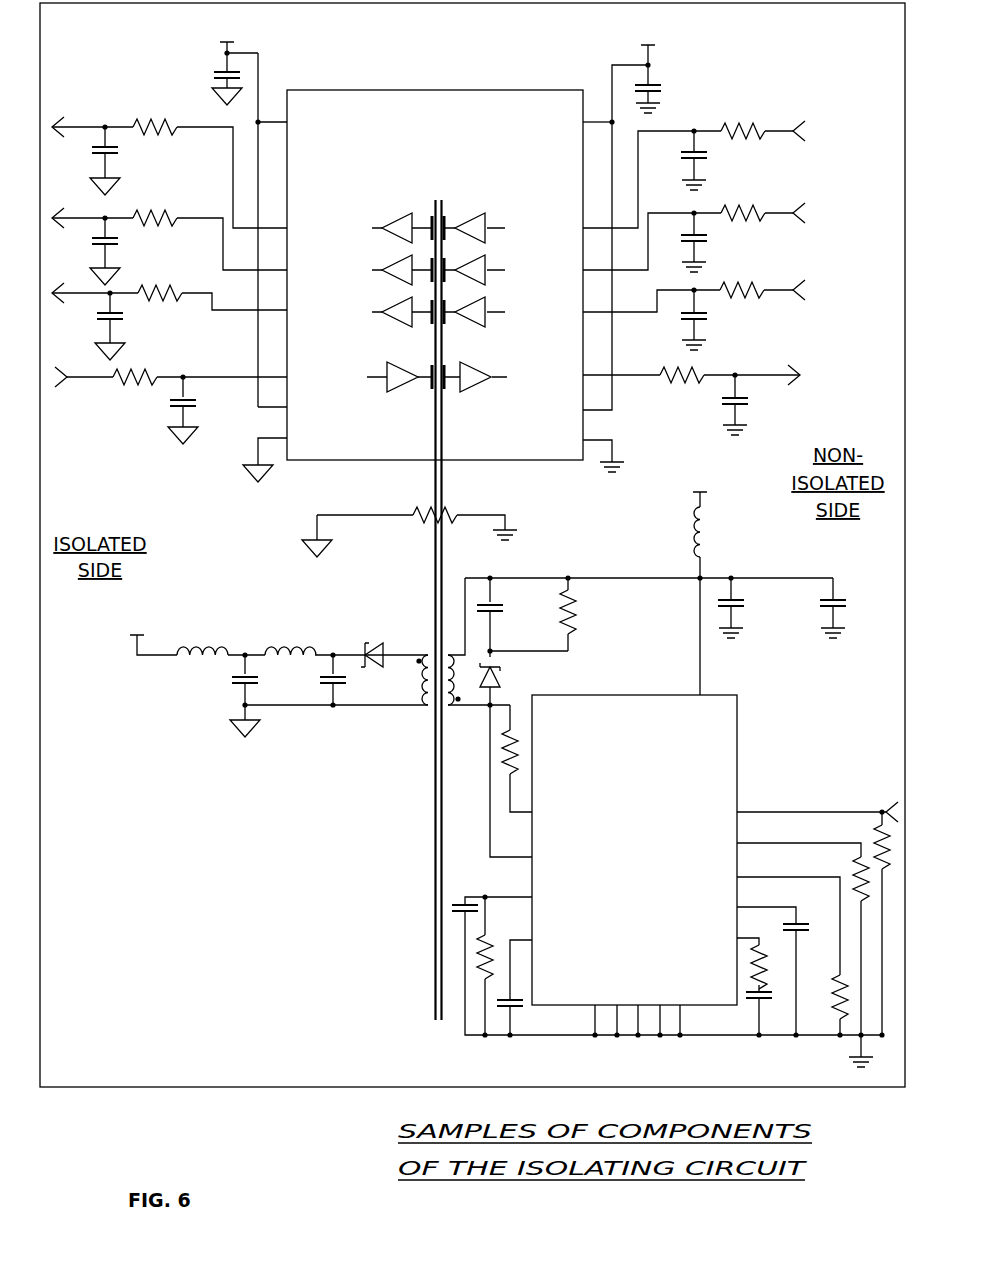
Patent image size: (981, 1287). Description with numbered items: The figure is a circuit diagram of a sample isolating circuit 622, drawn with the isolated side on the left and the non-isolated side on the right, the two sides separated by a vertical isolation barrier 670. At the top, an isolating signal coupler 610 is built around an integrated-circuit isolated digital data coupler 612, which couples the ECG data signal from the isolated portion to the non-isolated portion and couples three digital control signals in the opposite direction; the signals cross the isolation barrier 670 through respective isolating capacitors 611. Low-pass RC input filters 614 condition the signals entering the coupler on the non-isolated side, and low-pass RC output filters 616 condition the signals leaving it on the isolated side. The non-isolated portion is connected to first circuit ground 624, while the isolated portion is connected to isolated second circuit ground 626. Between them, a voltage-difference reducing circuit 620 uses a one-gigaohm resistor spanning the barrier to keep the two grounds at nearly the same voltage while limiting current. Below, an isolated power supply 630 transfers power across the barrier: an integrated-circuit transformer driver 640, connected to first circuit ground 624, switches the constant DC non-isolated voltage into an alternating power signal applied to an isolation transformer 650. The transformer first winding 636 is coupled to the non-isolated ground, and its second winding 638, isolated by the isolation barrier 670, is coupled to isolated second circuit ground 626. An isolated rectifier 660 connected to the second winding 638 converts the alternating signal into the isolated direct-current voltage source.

The isolating signal coupler 610 is at (122, 76).
The isolating capacitors 611 is at (424, 403).
The isolated digital data coupler 612 is at (435, 263).
The low-pass RC input filters 614 is at (795, 85).
The low-pass RC output filters 616 is at (108, 429).
The voltage-difference reducing circuit 620 is at (286, 514).
The isolating circuit 622 is at (472, 545).
The first circuit ground 624 is at (516, 537).
The isolated second circuit ground 626 is at (239, 473).
The isolated power supply 630 is at (323, 788).
The first winding 636 is at (479, 664).
The second winding 638 is at (420, 708).
The transformer driver 640 is at (670, 752).
The isolation transformer 650 is at (433, 681).
The isolated rectifier 660 is at (154, 685).
The isolation barrier 670 is at (434, 898).